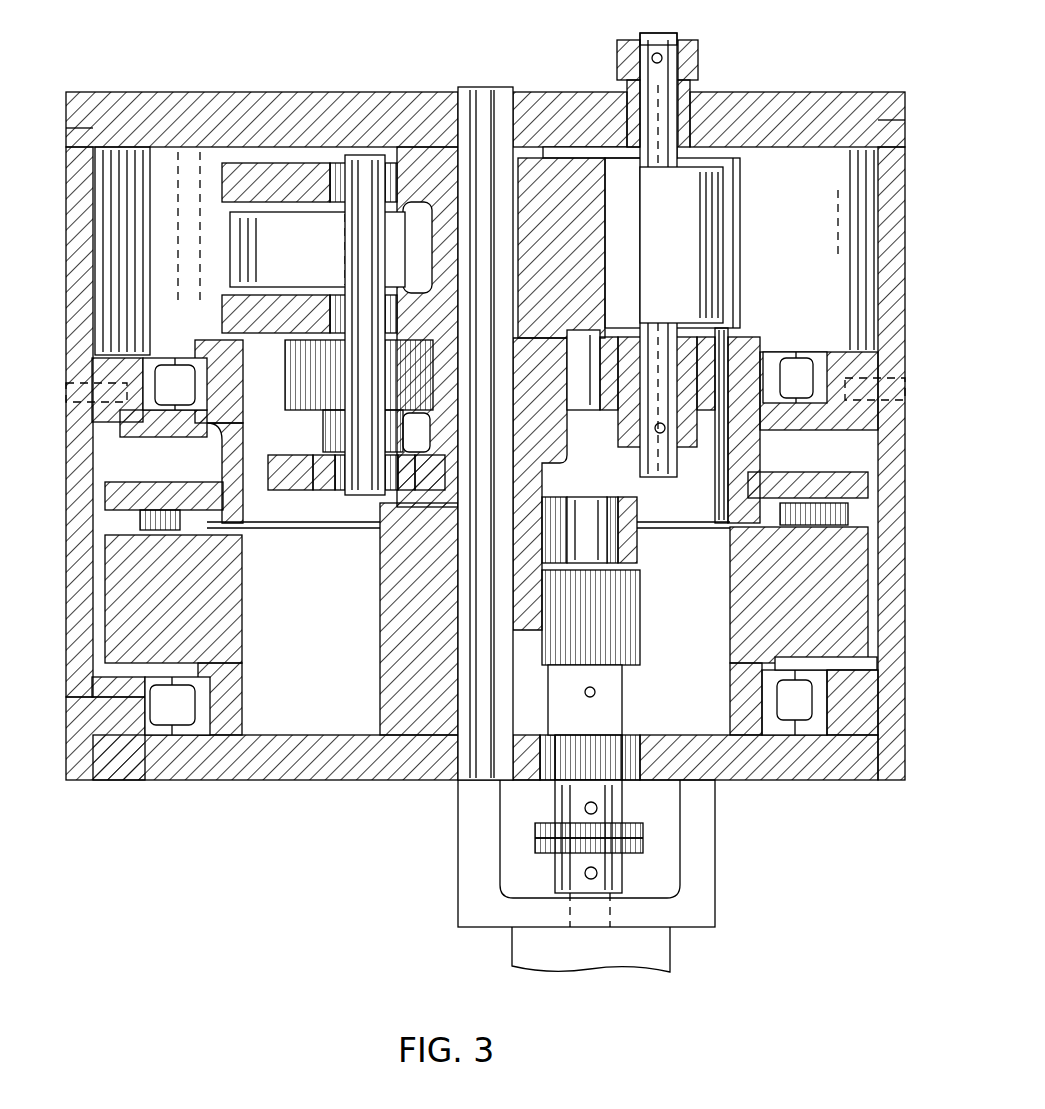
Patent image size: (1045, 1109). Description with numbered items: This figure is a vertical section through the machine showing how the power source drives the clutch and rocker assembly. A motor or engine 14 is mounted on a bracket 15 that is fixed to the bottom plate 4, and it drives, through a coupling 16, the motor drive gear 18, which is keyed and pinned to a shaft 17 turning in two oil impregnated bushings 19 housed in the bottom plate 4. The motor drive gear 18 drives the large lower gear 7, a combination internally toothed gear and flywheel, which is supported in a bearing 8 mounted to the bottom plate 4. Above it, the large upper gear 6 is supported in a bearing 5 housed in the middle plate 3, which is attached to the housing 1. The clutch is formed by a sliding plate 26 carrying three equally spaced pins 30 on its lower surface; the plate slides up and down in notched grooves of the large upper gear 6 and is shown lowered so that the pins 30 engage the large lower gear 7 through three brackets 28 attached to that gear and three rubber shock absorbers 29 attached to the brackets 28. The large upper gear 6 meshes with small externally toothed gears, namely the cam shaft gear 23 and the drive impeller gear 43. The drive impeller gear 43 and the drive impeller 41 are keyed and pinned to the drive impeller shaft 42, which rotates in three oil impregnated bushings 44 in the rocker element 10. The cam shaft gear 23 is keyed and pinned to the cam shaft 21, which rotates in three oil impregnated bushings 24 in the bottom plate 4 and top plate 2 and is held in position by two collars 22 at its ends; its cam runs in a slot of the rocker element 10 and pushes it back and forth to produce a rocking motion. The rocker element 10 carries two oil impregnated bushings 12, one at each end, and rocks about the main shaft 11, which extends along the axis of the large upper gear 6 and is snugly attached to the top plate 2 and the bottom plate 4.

The housing 1 is at (878, 180).
The top plate 2 is at (182, 92).
The middle plate 3 is at (848, 352).
The bottom plate 4 is at (300, 780).
The bearing 5 is at (795, 355).
The large upper gear 6 is at (745, 345).
The large lower gear 7 is at (140, 660).
The bearing 8 is at (190, 735).
The rocker element 10 is at (256, 163).
The main shaft 11 is at (497, 92).
The oil impregnated bushings 12 is at (441, 147).
The motor or engine 14 is at (672, 960).
The bracket 15 is at (716, 875).
The coupling 16 is at (643, 840).
The shaft 17 is at (600, 832).
The motor drive gear 18 is at (625, 690).
The oil impregnated bushings 19 is at (640, 565).
The cam shaft 21 is at (670, 42).
The collars 22 is at (640, 52).
The cam shaft gear 23 is at (606, 418).
The oil impregnated bushings 24 is at (695, 88).
The sliding plate 26 is at (160, 482).
The brackets 28 is at (765, 603).
The rubber shock absorbers 29 is at (810, 520).
The pins 30 is at (175, 530).
The drive impeller 41 is at (230, 255).
The drive impeller shaft 42 is at (367, 155).
The drive impeller gear 43 is at (285, 370).
The oil impregnated bushings 44 is at (335, 163).